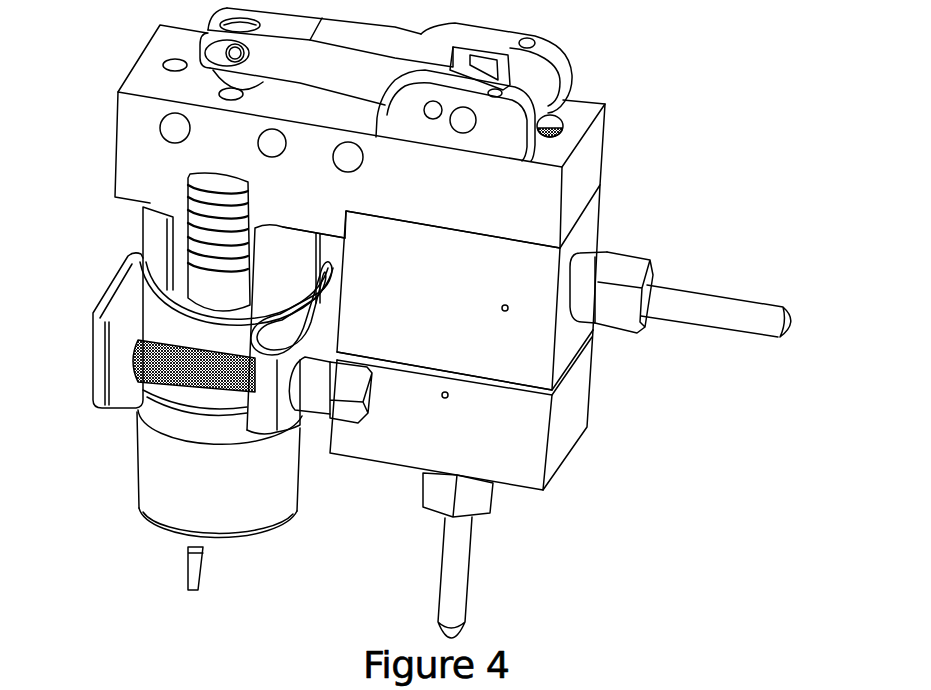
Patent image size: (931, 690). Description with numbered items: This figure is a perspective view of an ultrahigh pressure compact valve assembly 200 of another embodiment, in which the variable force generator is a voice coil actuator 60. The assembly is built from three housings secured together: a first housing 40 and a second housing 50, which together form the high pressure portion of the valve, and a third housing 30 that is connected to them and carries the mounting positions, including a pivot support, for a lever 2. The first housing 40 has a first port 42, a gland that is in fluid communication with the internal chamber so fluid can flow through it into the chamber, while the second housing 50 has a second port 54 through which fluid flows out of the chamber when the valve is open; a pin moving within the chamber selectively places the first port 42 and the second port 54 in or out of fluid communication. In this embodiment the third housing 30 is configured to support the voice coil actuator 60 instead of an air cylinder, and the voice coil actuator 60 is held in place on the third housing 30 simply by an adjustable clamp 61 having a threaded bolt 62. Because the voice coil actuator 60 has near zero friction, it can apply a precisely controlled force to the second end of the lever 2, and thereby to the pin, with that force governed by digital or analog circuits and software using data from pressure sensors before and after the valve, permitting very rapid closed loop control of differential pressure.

The valve assembly 200 is at (660, 78).
The lever 2 is at (369, 30).
The third housing 30 is at (140, 158).
The first housing 40 is at (597, 223).
The first port 42 is at (652, 272).
The second housing 50 is at (575, 413).
The second port 54 is at (482, 493).
The voice coil actuator 60 is at (147, 492).
The adjustable clamp 61 is at (97, 360).
The threaded bolt 62 is at (172, 388).